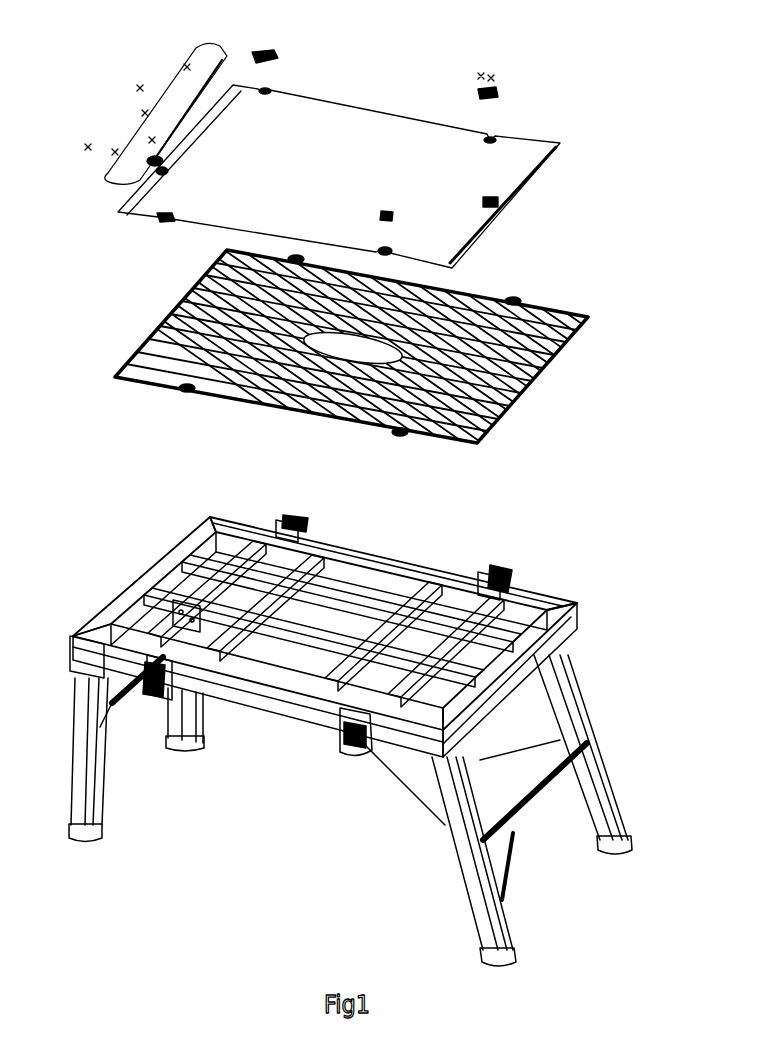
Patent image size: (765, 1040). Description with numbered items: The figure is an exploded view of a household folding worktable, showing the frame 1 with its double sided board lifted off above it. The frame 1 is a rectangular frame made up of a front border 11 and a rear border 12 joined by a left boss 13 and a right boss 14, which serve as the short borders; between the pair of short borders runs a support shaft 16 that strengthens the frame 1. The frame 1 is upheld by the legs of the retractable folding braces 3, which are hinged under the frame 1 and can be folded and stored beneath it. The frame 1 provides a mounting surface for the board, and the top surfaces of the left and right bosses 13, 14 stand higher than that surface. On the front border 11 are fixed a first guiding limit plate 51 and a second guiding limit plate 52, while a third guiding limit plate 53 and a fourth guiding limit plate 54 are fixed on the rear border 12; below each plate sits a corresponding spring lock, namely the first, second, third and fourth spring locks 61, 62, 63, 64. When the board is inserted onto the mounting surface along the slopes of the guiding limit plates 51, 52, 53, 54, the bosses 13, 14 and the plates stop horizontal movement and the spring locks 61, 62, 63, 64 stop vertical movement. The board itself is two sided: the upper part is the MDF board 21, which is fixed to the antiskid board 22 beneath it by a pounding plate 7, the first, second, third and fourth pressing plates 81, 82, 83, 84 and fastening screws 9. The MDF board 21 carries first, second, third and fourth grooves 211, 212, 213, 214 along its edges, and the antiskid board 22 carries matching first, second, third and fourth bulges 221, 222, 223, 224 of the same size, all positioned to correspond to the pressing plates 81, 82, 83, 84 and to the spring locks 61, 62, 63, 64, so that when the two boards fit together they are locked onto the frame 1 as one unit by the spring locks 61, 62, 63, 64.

The frame 1 is at (386, 721).
The front border 11 is at (247, 772).
The rear border 12 is at (395, 570).
The left boss 13 is at (170, 567).
The right boss 14 is at (497, 708).
The support shaft 16 is at (340, 647).
The retractable folding braces 3 is at (452, 808).
The first guiding limit plate 51 is at (150, 643).
The second guiding limit plate 52 is at (360, 720).
The third guiding limit plate 53 is at (280, 527).
The fourth guiding limit plate 54 is at (480, 583).
The first spring lock 61 is at (152, 697).
The second spring lock 62 is at (347, 752).
The third spring lock 63 is at (287, 528).
The fourth spring lock 64 is at (505, 580).
The MDF board 21 is at (357, 159).
The first groove of the MDF board 211 is at (155, 220).
The second groove of the MDF board 212 is at (383, 252).
The third groove of the MDF board 213 is at (263, 92).
The fourth groove of the MDF board 214 is at (490, 140).
The antiskid board 22 is at (391, 345).
The first bulge of the antiskid board 221 is at (187, 387).
The second bulge of the antiskid board 222 is at (400, 433).
The third bulge of the antiskid board 223 is at (300, 255).
The fourth bulge of the antiskid board 224 is at (513, 300).
The pounding plate 7 is at (133, 142).
The first pressing plate 81 is at (157, 167).
The second pressing plate 82 is at (397, 223).
The third pressing plate 83 is at (267, 60).
The fourth pressing plate 84 is at (497, 97).
The fastening screws 9 is at (133, 93).